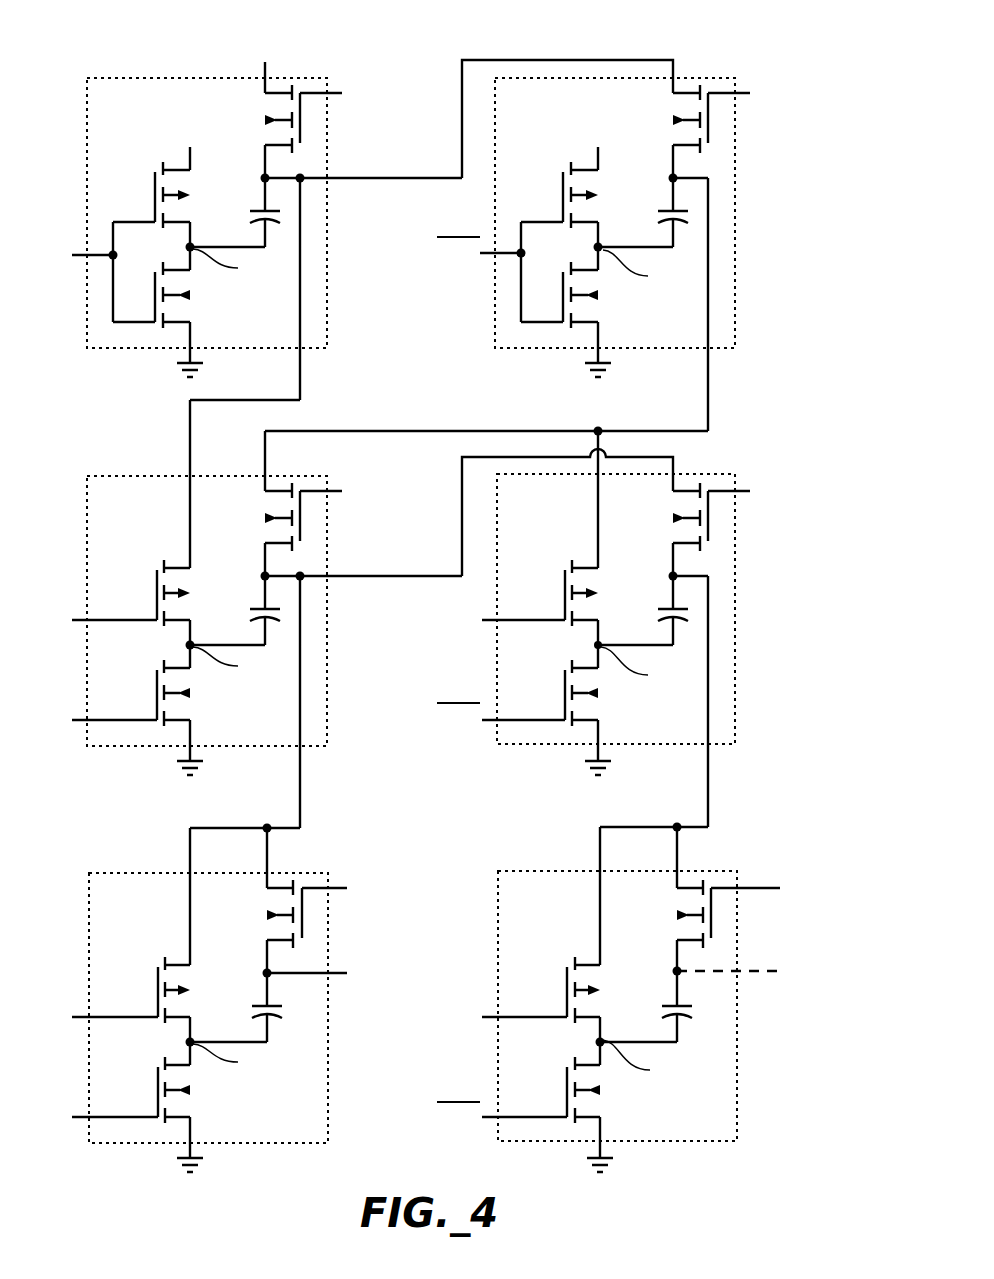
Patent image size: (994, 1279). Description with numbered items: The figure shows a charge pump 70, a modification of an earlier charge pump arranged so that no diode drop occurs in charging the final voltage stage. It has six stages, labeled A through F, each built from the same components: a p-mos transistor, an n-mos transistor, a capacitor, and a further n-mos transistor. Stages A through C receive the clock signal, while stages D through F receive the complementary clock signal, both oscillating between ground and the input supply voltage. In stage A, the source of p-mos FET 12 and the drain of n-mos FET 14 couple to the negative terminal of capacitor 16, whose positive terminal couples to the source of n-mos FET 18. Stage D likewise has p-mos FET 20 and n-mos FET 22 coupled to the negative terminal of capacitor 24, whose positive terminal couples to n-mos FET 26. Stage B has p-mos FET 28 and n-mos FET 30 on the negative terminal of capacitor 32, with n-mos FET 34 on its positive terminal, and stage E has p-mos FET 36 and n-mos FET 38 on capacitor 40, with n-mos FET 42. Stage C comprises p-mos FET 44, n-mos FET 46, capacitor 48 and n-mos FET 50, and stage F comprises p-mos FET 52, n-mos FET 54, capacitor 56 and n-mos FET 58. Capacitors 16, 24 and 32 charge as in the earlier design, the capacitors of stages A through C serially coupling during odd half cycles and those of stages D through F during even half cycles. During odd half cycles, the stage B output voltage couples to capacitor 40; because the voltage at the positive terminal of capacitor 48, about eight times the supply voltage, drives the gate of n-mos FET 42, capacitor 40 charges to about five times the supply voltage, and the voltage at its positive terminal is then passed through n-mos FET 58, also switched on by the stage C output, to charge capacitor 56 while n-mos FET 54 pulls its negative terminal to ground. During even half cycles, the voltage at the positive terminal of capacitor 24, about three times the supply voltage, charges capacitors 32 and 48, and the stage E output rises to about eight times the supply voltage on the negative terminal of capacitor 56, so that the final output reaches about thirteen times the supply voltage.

The p-mos FET 12 is at (155, 193).
The n-mos FET 14 is at (152, 298).
The capacitor 16 is at (246, 222).
The n-mos FET 18 is at (302, 119).
The p-mos FET 20 is at (563, 193).
The n-mos FET 22 is at (560, 298).
The capacitor 24 is at (654, 222).
The n-mos FET 26 is at (710, 119).
The p-mos FET 28 is at (157, 595).
The n-mos FET 30 is at (157, 695).
The capacitor 32 is at (246, 620).
The n-mos FET 34 is at (302, 517).
The p-mos FET 36 is at (565, 592).
The n-mos FET 38 is at (565, 692).
The capacitor 40 is at (654, 620).
The n-mos FET 42 is at (710, 515).
The p-mos FET 44 is at (158, 990).
The n-mos FET 46 is at (158, 1090).
The capacitor 48 is at (287, 1012).
The n-mos FET 50 is at (304, 913).
The p-mos FET 52 is at (567, 988).
The n-mos FET 54 is at (567, 1088).
The capacitor 56 is at (697, 1010).
The n-mos FET 58 is at (713, 913).
The charge pump 70 is at (438, 588).